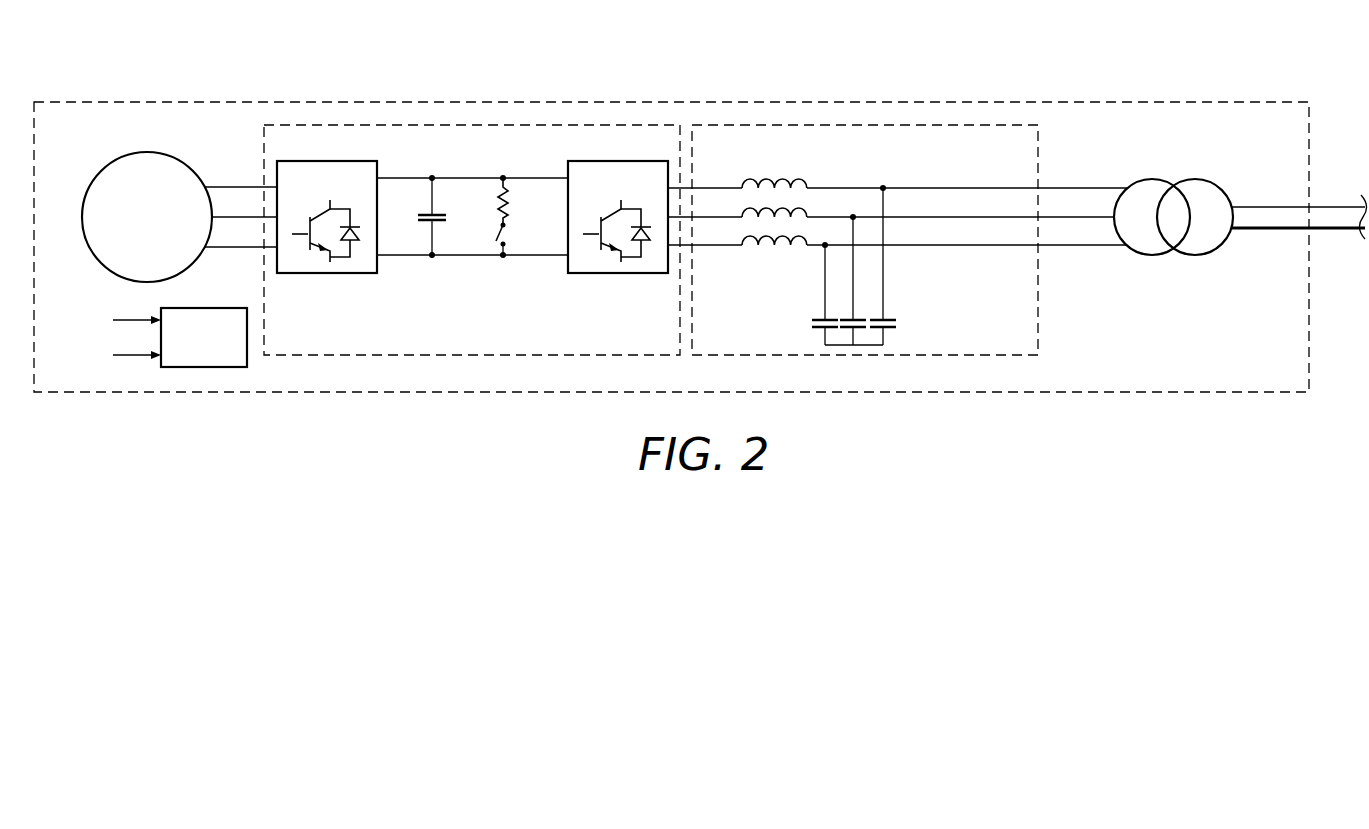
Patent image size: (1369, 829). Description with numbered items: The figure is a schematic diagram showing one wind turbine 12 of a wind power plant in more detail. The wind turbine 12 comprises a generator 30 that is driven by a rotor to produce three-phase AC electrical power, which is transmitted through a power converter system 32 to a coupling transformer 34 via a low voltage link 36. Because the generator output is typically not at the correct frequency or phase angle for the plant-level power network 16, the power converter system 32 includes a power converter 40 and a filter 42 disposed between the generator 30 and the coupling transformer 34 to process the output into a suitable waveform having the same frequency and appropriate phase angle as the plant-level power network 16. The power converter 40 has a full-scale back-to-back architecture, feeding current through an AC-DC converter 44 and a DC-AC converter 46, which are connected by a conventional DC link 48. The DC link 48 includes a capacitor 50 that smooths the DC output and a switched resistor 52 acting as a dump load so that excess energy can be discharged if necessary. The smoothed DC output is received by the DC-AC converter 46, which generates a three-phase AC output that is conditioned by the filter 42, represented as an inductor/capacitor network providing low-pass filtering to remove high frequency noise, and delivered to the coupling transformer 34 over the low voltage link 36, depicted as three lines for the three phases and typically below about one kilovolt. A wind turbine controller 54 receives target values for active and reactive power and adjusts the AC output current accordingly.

The wind turbine 12 is at (1283, 395).
The plant-level power network 16 is at (1337, 207).
The generator 30 is at (110, 163).
The power converter system 32 is at (781, 80).
The coupling transformer 34 is at (1178, 171).
The low voltage link 36 is at (1083, 249).
The power converter 40 is at (650, 125).
The filter 42 is at (1010, 125).
The AC-DC converter 44 is at (355, 275).
The DC-AC converter 46 is at (647, 275).
The DC link 48 is at (472, 258).
The capacitor 50 is at (422, 213).
The switched resistor 52 is at (497, 205).
The wind turbine controller 54 is at (154, 337).